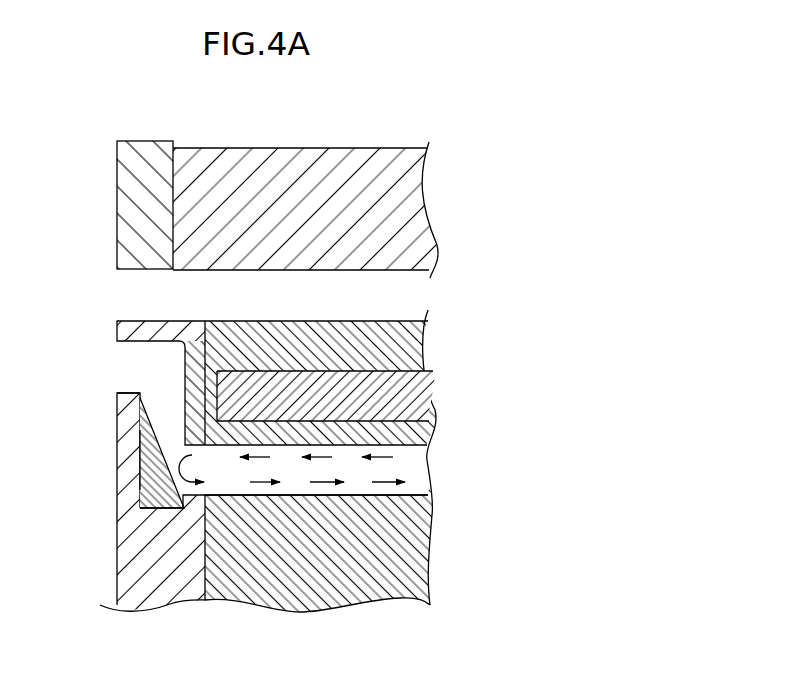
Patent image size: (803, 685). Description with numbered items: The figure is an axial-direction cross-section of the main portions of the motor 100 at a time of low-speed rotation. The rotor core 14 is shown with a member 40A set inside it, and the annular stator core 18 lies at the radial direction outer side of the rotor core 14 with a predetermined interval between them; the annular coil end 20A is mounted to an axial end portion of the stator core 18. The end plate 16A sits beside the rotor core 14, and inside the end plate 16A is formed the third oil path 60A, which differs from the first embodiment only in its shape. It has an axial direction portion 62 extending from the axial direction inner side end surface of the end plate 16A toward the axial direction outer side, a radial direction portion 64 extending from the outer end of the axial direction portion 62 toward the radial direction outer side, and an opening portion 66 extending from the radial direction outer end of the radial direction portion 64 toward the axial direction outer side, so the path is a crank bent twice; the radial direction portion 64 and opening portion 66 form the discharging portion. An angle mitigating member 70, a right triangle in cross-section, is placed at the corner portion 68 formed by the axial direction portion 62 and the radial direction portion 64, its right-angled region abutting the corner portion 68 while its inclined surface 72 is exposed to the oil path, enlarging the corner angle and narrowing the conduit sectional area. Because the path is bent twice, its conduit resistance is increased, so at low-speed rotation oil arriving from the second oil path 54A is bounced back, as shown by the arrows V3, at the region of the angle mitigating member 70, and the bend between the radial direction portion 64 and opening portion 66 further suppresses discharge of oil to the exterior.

The motor 100 is at (386, 118).
The coil end 20A is at (145, 141).
The stator core 18 is at (282, 148).
The rotor core 14 is at (397, 320).
The insulating member (40) 40A is at (305, 370).
The third oil path 60A is at (151, 365).
The opening portion 66 is at (122, 368).
The end plate 16A is at (114, 578).
The radial direction portion 64 is at (152, 398).
The inclined surface 72 is at (141, 433).
The angle mitigating member 70 is at (137, 475).
The corner portion 68 is at (148, 506).
The axial direction portion 62 is at (193, 488).
The arrows V3 is at (300, 462).
The second oil path 54A is at (388, 496).